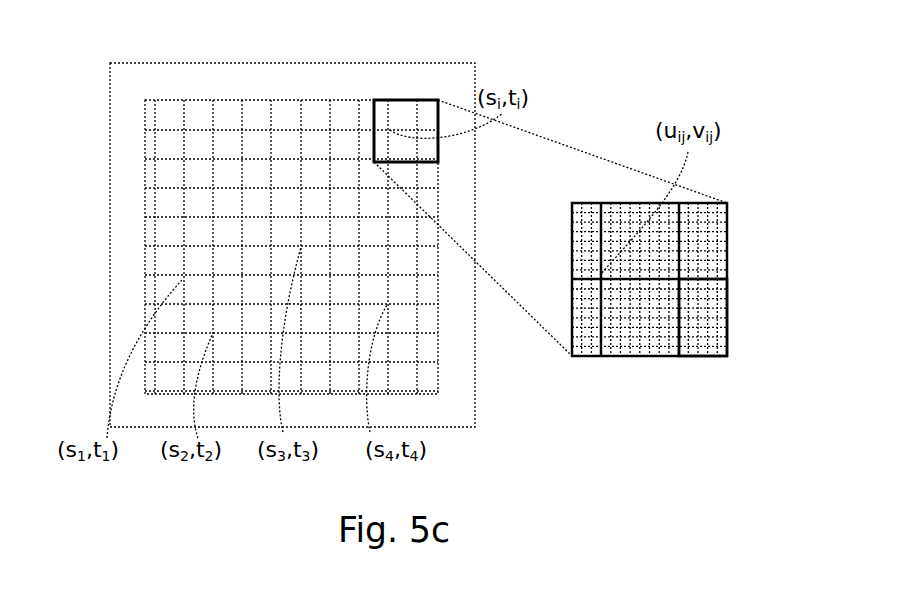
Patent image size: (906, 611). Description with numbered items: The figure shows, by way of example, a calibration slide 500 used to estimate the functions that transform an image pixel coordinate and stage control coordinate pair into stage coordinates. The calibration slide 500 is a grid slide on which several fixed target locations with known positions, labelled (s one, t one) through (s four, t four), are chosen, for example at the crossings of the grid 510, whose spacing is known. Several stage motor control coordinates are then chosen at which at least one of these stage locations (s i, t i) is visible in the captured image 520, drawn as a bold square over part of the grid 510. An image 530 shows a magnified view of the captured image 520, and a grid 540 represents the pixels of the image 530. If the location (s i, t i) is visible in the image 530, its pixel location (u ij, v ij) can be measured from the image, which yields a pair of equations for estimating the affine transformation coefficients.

The calibration slide 500 is at (127, 105).
The grid 510 is at (438, 393).
The captured image 520 is at (438, 163).
The image 530 is at (727, 208).
The grid 540 is at (727, 343).